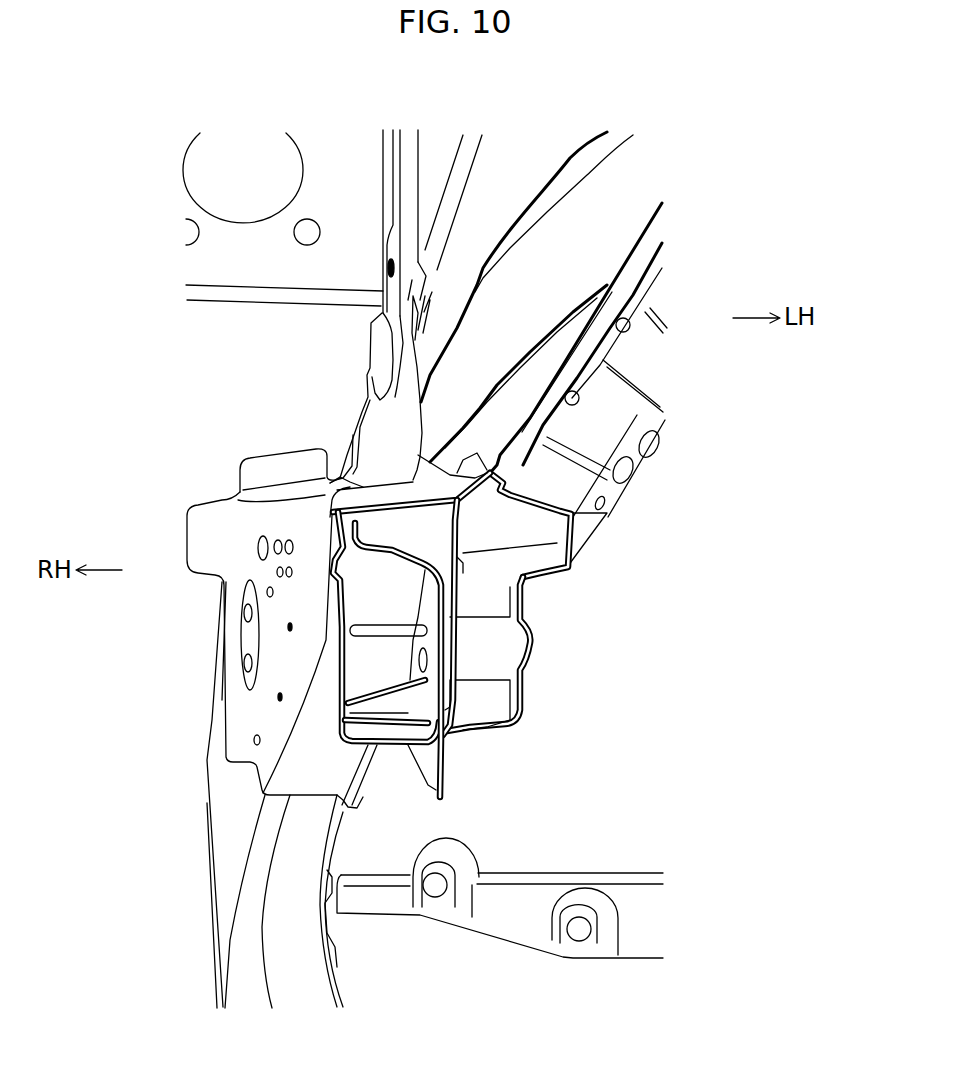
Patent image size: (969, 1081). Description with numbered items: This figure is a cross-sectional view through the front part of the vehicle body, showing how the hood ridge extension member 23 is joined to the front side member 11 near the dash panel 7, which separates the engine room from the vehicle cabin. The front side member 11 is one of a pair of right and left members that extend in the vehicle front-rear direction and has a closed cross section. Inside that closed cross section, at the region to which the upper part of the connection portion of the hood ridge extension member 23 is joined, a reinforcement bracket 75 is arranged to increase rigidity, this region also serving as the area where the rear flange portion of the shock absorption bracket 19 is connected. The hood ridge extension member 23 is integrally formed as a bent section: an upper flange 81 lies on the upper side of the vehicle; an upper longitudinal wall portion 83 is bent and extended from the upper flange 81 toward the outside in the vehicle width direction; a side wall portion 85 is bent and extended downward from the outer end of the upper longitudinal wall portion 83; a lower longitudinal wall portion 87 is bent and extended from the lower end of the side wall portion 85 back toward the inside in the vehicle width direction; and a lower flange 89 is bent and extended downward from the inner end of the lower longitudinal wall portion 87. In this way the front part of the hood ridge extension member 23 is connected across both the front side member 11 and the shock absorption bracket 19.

The dash panel 7 is at (273, 400).
The front side member 11 is at (310, 512).
The shock absorption bracket 19 is at (503, 741).
The hood ridge extension member 23 is at (678, 385).
The reinforcement bracket 75 is at (402, 548).
The upper flange 81 is at (637, 293).
The upper longitudinal wall portion 83 is at (603, 413).
The side wall portion 85 is at (640, 458).
The lower longitudinal wall portion 87 is at (550, 570).
The lower flange 89 is at (528, 610).